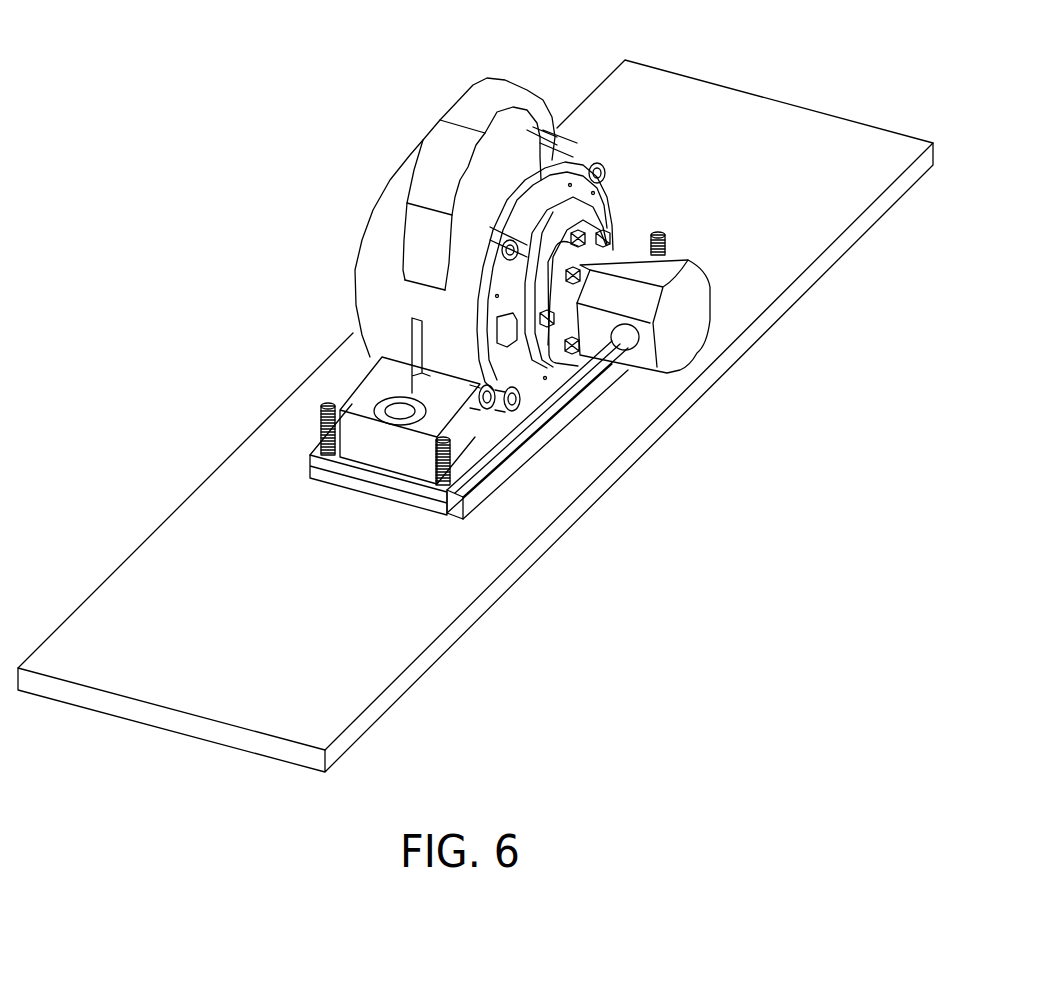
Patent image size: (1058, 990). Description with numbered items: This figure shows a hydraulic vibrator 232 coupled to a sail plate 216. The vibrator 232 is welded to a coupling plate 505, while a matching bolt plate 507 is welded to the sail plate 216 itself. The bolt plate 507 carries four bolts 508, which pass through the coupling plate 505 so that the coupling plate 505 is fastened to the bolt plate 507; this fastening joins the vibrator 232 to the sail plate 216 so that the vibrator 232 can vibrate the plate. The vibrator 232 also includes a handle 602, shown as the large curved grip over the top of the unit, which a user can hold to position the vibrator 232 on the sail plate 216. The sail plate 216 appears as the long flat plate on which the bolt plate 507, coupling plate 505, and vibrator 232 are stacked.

The sail plate 216 is at (372, 672).
The vibrator 232 is at (322, 125).
The coupling plate 505 is at (500, 427).
The bolt plate 507 is at (387, 493).
The bolts 508 is at (320, 430).
The handle 602 is at (467, 106).